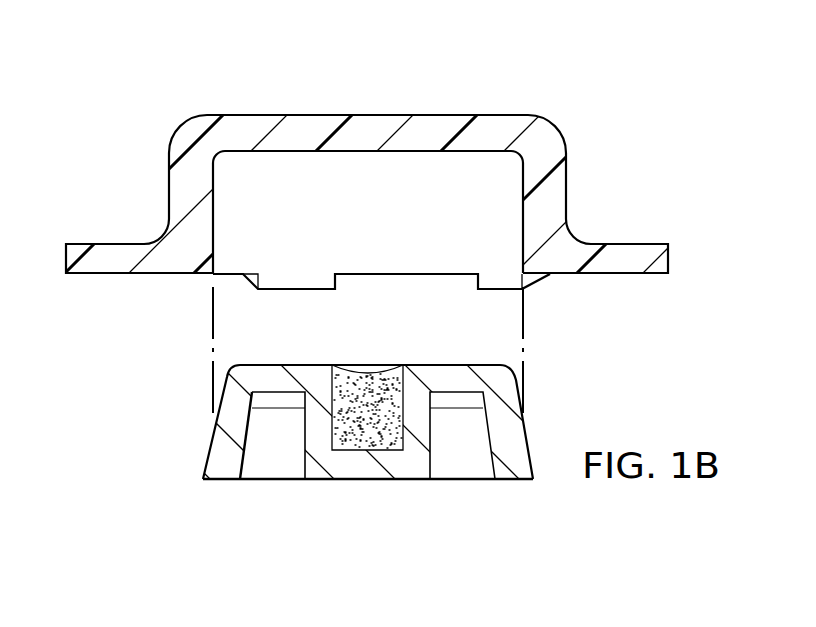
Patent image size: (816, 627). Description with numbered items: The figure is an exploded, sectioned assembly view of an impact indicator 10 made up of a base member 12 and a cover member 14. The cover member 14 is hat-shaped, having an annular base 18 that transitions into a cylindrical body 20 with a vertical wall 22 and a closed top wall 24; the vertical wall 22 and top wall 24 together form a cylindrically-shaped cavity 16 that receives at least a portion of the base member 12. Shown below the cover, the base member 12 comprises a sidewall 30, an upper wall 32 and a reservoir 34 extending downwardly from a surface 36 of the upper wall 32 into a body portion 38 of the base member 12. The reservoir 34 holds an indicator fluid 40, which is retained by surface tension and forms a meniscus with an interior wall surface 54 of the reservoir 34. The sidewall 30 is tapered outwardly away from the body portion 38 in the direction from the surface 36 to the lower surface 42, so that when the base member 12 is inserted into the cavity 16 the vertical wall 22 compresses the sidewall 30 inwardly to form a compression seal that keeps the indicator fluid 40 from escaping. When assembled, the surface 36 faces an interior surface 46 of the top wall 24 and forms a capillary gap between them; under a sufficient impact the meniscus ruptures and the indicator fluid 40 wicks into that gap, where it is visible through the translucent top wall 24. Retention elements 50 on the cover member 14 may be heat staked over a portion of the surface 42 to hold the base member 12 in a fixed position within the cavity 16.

The impact indicator 10 is at (137, 77).
The base member 12 is at (525, 481).
The cover member 14 is at (670, 256).
The cavity 16 is at (380, 228).
The annular base 18 is at (112, 243).
The cylindrical body 20 is at (570, 185).
The vertical wall 22 is at (532, 225).
The top wall 24 is at (256, 115).
The sidewall 30 is at (218, 458).
The upper wall 32 is at (428, 372).
The reservoir 34 is at (327, 378).
The surface 36 is at (262, 363).
The body portion 38 is at (348, 471).
The indicator fluid 40 is at (370, 377).
The surface 42 is at (252, 481).
The interior surface 46 is at (295, 153).
The retention elements 50 is at (500, 292).
The interior wall surface 54 is at (395, 426).